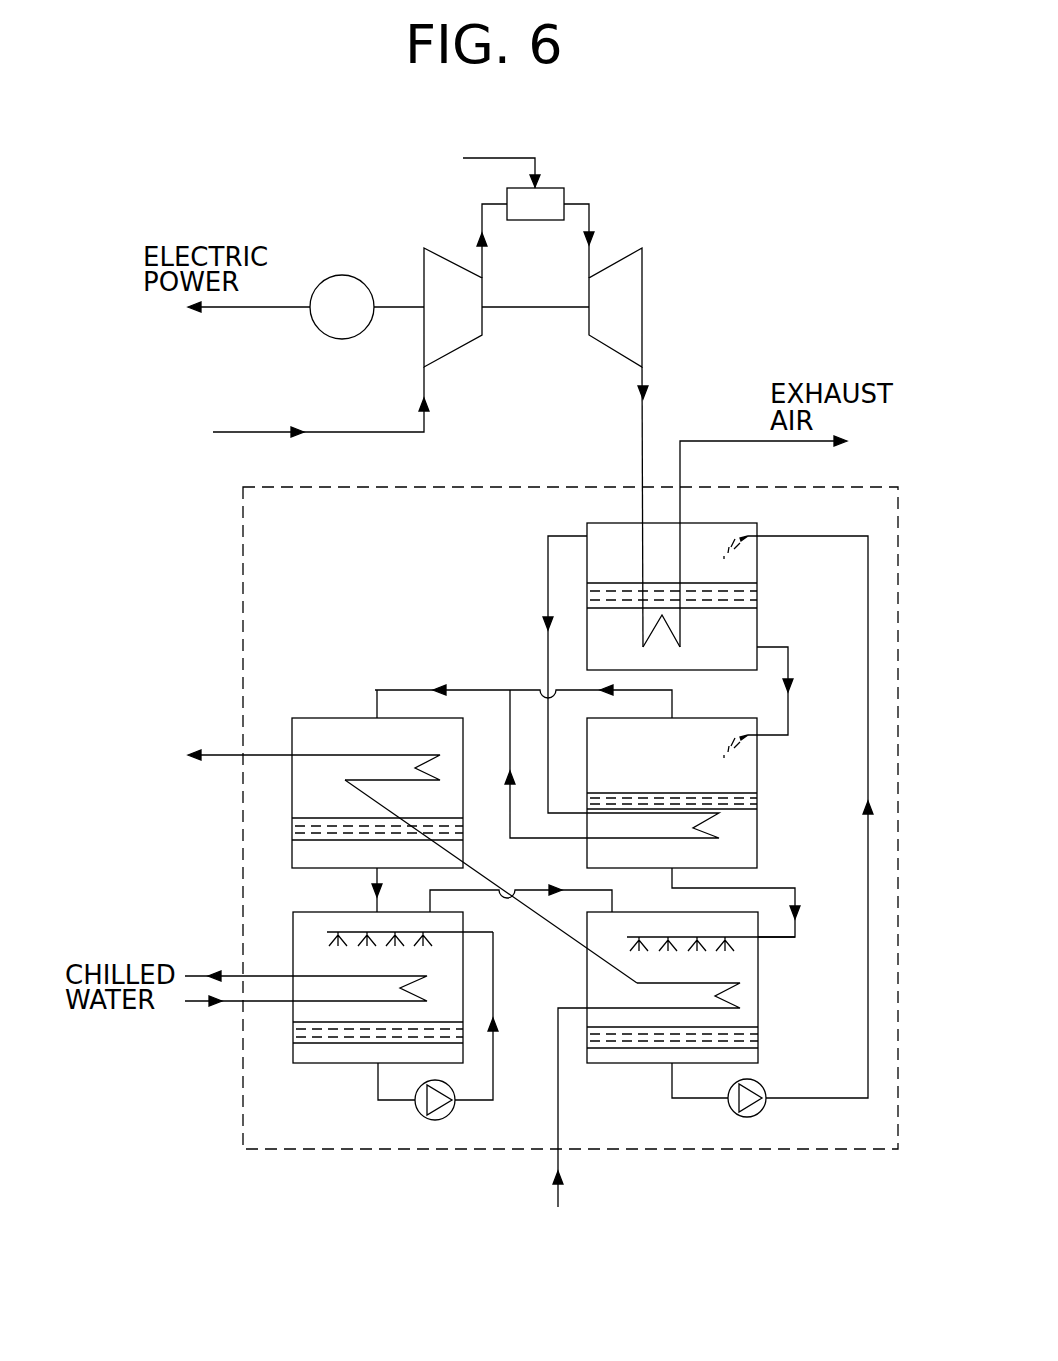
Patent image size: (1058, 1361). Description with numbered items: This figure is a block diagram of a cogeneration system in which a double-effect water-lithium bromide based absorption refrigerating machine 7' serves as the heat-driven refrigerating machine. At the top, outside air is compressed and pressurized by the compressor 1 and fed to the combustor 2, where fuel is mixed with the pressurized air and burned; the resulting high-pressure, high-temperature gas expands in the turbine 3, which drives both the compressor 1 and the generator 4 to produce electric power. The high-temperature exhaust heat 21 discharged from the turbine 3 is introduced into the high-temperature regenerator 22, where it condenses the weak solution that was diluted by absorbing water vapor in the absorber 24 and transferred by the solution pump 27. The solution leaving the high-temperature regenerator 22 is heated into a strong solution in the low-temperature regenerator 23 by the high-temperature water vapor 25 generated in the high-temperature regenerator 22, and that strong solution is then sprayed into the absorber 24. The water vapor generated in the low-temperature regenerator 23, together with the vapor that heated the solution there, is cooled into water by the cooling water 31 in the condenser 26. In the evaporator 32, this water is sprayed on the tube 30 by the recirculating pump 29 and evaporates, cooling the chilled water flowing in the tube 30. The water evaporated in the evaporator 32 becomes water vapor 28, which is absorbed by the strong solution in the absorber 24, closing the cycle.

The compressor 1 is at (447, 260).
The combustor 2 is at (553, 188).
The turbine 3 is at (614, 263).
The generator 4 is at (342, 275).
The double-effect water-lithium bromide based absorption refrigerating machine 7' is at (524, 818).
The high-temperature exhaust heat 21 is at (643, 433).
The high-temperature regenerator 22 is at (757, 572).
The low-temperature regenerator 23 is at (757, 763).
The absorber 24 is at (758, 958).
The high-temperature water vapor 25 is at (547, 655).
The condenser 26 is at (317, 718).
The solution pump 27 is at (747, 1118).
The water vapor 28 is at (580, 892).
The recirculating pump 29 is at (433, 1120).
The tube 30 is at (335, 1003).
The cooling water 31 is at (558, 1193).
The evaporator 32 is at (292, 940).